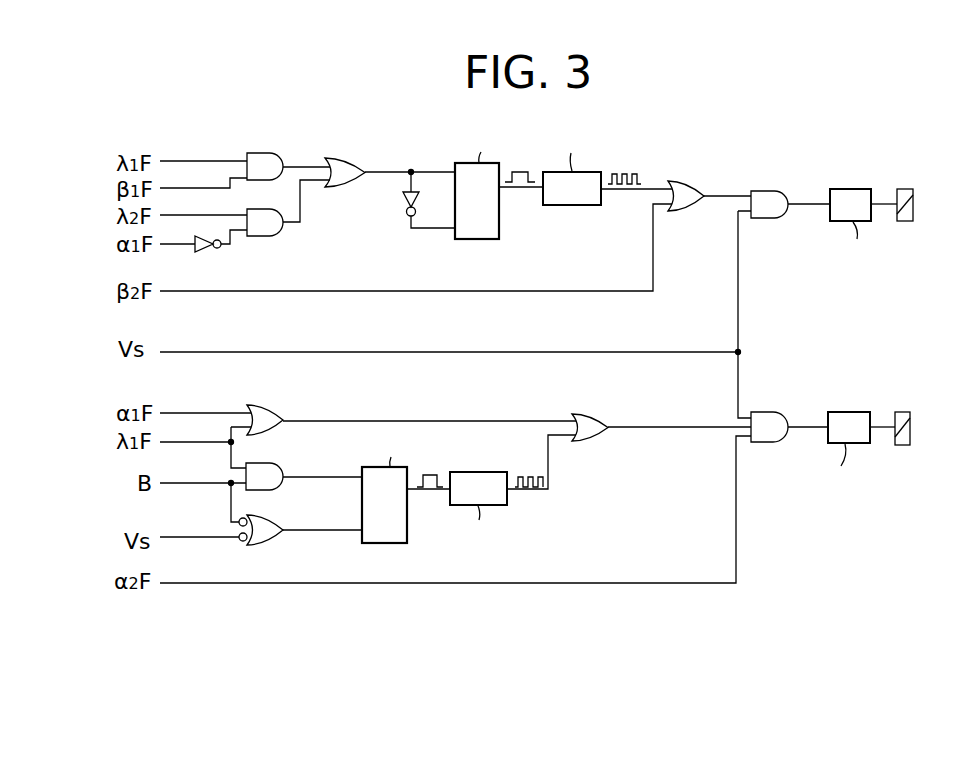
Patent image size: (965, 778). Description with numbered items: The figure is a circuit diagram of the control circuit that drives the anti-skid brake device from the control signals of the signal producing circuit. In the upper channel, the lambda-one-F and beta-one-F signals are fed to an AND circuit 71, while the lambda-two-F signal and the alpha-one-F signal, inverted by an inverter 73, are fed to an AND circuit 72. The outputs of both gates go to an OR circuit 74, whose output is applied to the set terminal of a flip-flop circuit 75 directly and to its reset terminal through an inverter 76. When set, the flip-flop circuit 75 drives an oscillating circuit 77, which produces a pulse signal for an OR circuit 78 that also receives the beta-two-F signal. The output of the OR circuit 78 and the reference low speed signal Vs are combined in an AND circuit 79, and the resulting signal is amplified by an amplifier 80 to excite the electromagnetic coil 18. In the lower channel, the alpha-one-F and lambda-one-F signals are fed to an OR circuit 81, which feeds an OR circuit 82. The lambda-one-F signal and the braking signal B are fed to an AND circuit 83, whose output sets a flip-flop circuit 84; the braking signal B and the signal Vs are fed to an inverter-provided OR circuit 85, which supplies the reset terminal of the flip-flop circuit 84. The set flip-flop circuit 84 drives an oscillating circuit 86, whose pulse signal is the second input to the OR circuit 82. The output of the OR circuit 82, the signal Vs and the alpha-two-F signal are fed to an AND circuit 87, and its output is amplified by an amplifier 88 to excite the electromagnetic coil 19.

The AND circuit 71 is at (266, 156).
The AND circuit 72 is at (263, 238).
The inverter 73 is at (207, 249).
The OR circuit 74 is at (338, 160).
The flip-flop circuit 75 is at (492, 216).
The inverter 76 is at (404, 200).
The oscillating circuit 77 is at (588, 201).
The OR circuit 78 is at (677, 181).
The AND circuit 79 is at (766, 192).
The amplifier 80 is at (850, 189).
The electromagnetic coil 18 is at (913, 204).
The OR circuit 81 is at (263, 410).
The OR circuit 82 is at (586, 414).
The AND circuit 83 is at (280, 466).
The flip-flop circuit 84 is at (400, 516).
The inverter-provided OR circuit 85 is at (266, 546).
The oscillating circuit 86 is at (496, 499).
The AND circuit 87 is at (764, 412).
The amplifier 88 is at (848, 412).
The electromagnetic coil 19 is at (910, 427).